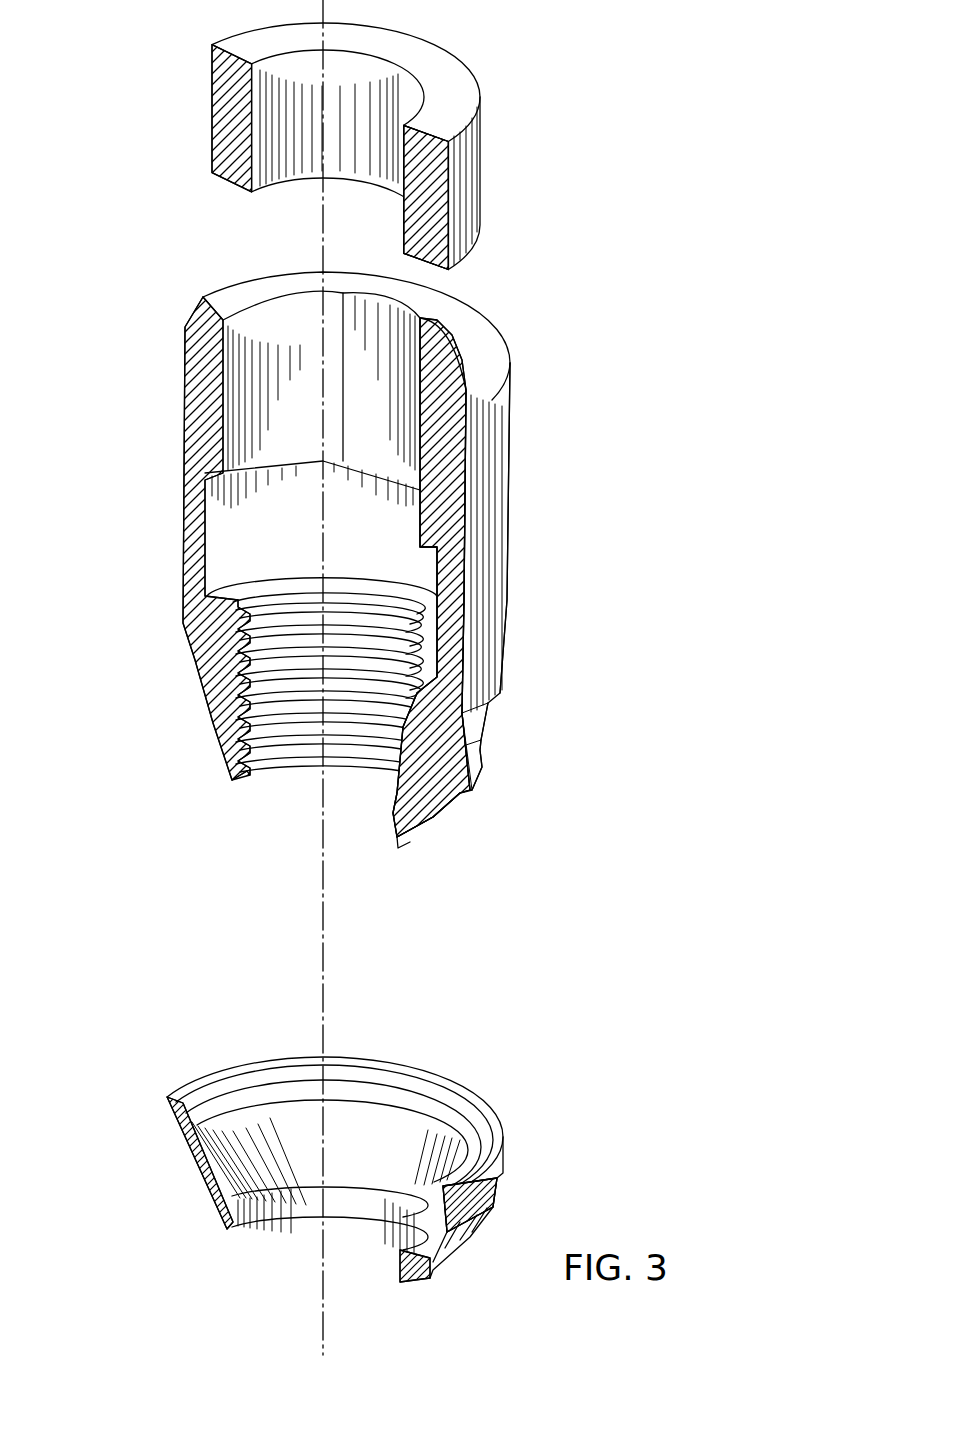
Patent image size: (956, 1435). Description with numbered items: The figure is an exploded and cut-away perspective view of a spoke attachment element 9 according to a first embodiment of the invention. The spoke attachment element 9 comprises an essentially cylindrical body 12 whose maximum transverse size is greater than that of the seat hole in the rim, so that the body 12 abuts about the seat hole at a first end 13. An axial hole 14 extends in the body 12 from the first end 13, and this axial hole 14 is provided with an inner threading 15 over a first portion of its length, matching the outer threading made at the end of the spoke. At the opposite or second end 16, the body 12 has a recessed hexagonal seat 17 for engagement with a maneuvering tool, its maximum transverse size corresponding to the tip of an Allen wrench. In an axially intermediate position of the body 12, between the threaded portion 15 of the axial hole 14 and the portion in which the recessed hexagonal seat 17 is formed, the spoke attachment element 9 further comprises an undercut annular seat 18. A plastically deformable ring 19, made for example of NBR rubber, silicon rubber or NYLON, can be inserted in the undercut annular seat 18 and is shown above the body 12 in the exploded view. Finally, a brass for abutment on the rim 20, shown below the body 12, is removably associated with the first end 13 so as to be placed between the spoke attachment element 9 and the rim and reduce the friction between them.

The spoke attachment element 9 is at (367, 590).
The body 12 is at (506, 583).
The first end 13 is at (497, 777).
The axial hole 14 is at (302, 784).
The inner threading 15 is at (270, 772).
The second end 16 is at (346, 560).
The recessed hexagonal seat 17 is at (390, 348).
The undercut annular seat 18 is at (232, 547).
The plastically deformable ring 19 is at (213, 118).
The brass for abutment on the rim 20 is at (471, 1071).